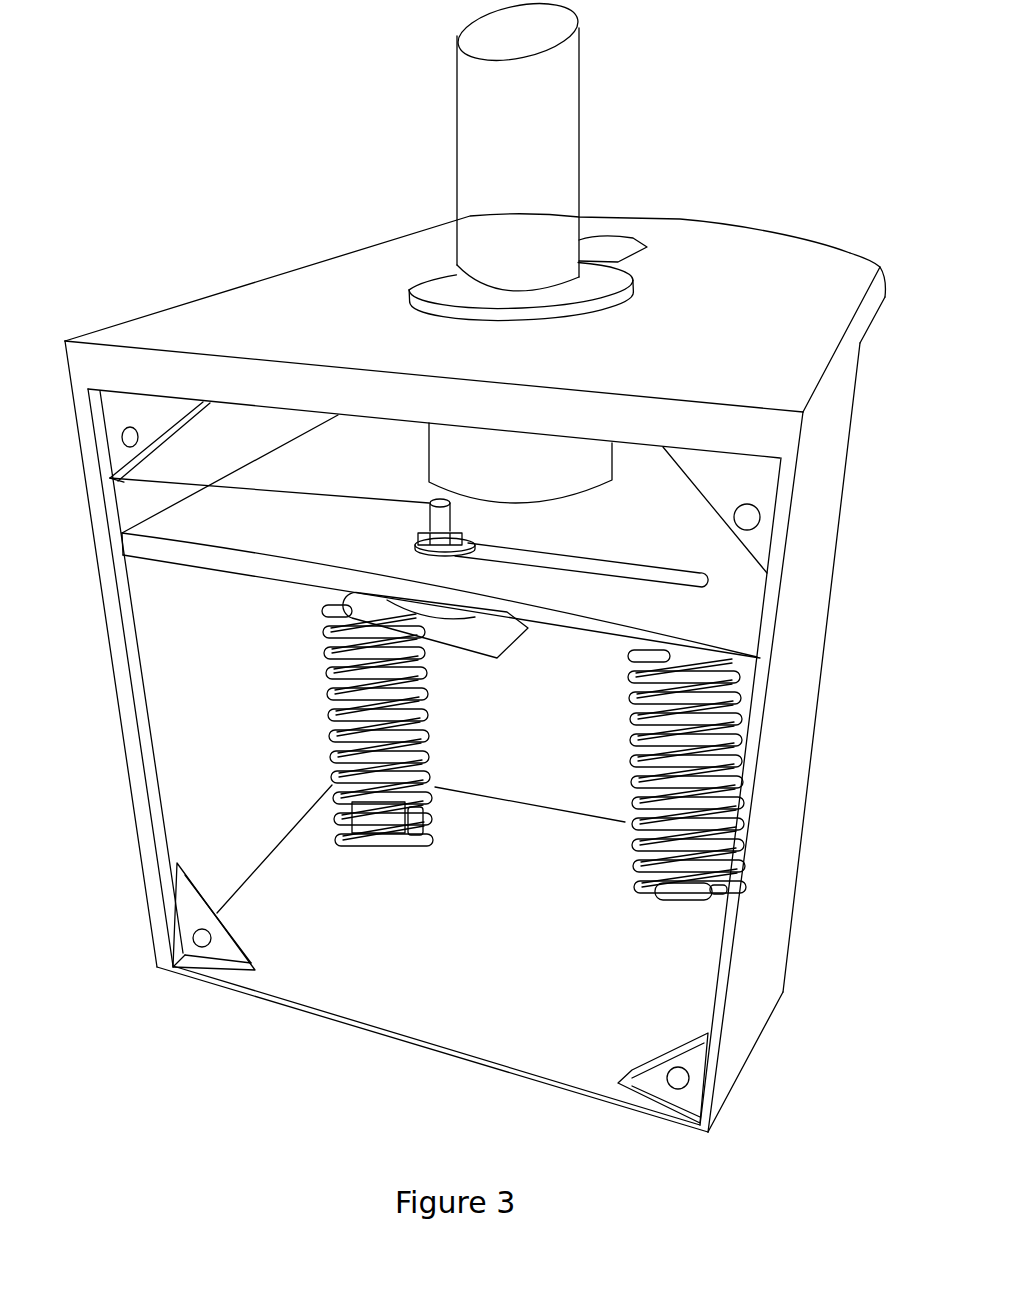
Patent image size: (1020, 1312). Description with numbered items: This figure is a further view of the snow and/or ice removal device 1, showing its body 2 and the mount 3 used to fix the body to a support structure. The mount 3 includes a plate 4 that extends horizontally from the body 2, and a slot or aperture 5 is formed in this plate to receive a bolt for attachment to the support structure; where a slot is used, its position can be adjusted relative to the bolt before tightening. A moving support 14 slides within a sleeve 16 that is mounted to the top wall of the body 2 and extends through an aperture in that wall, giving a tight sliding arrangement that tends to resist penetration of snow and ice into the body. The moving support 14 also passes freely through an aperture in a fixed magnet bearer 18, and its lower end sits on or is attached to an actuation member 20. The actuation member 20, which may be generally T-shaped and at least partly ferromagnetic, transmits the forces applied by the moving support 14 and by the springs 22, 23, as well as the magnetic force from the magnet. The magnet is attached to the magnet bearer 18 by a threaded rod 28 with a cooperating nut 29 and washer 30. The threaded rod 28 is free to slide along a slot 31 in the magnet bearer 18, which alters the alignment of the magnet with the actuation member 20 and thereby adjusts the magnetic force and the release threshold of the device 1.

The snow and/or ice removal device 1 is at (790, 124).
The body 2 is at (835, 422).
The mount 3 is at (695, 189).
The plate 4 is at (752, 240).
The slot or aperture 5 is at (607, 242).
The moving support 14 is at (528, 146).
The sleeve 16 is at (430, 282).
The fixed magnet bearer 18 is at (730, 598).
The actuation member 20 is at (732, 662).
The spring 22 is at (385, 718).
The spring 23 is at (690, 790).
The threaded rod 28 is at (114, 479).
The nut 29 is at (415, 533).
The washer 30 is at (418, 549).
The slot 31 is at (668, 576).